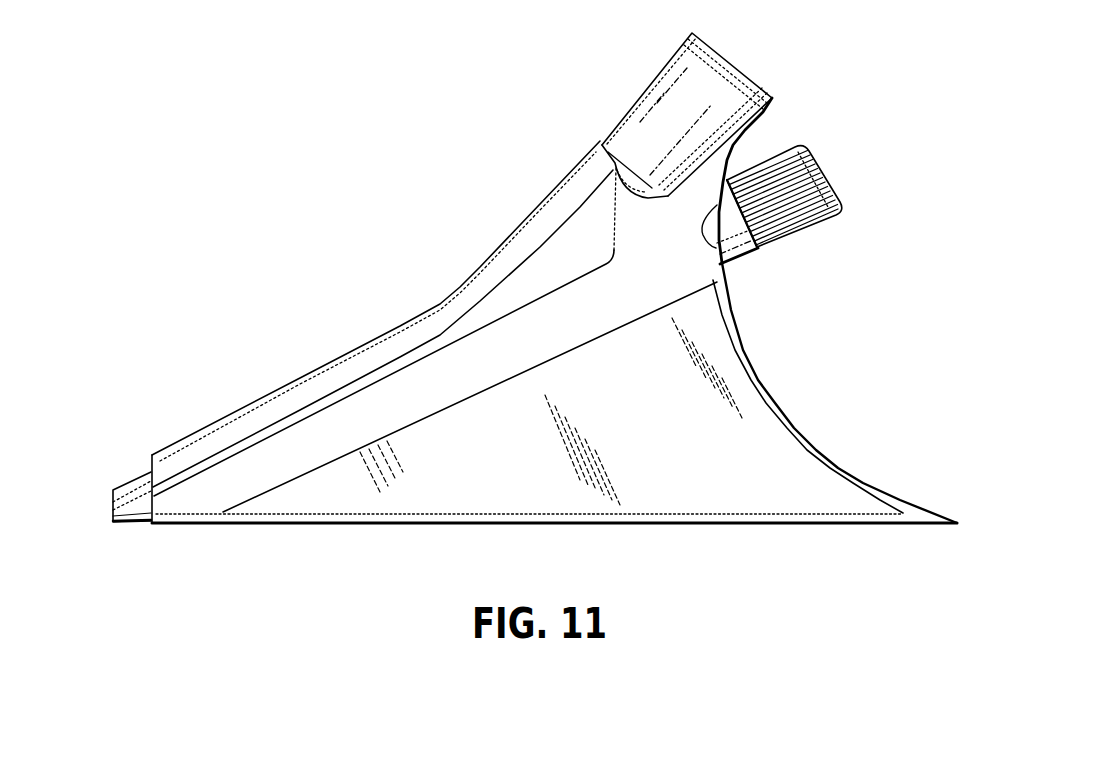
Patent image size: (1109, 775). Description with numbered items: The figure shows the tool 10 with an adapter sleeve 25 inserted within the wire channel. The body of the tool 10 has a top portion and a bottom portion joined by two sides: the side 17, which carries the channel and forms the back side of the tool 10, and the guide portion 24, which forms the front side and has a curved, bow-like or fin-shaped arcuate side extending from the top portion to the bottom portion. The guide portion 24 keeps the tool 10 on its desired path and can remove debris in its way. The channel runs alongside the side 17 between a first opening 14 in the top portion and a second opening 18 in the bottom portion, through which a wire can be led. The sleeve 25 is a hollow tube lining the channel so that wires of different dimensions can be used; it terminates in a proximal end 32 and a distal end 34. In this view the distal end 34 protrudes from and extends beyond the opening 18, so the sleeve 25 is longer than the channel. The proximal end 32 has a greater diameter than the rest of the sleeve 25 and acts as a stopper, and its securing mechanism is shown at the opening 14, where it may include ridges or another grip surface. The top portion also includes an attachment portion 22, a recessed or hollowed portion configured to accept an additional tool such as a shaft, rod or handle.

The tool 10 is at (424, 178).
The first opening 14 is at (746, 258).
The side 17 is at (400, 331).
The second opening 18 is at (166, 478).
The attachment portion 22 is at (690, 79).
The guide portion 24 is at (776, 402).
The sleeve 25 is at (832, 153).
The proximal end 32 is at (844, 212).
The distal end 34 is at (118, 484).